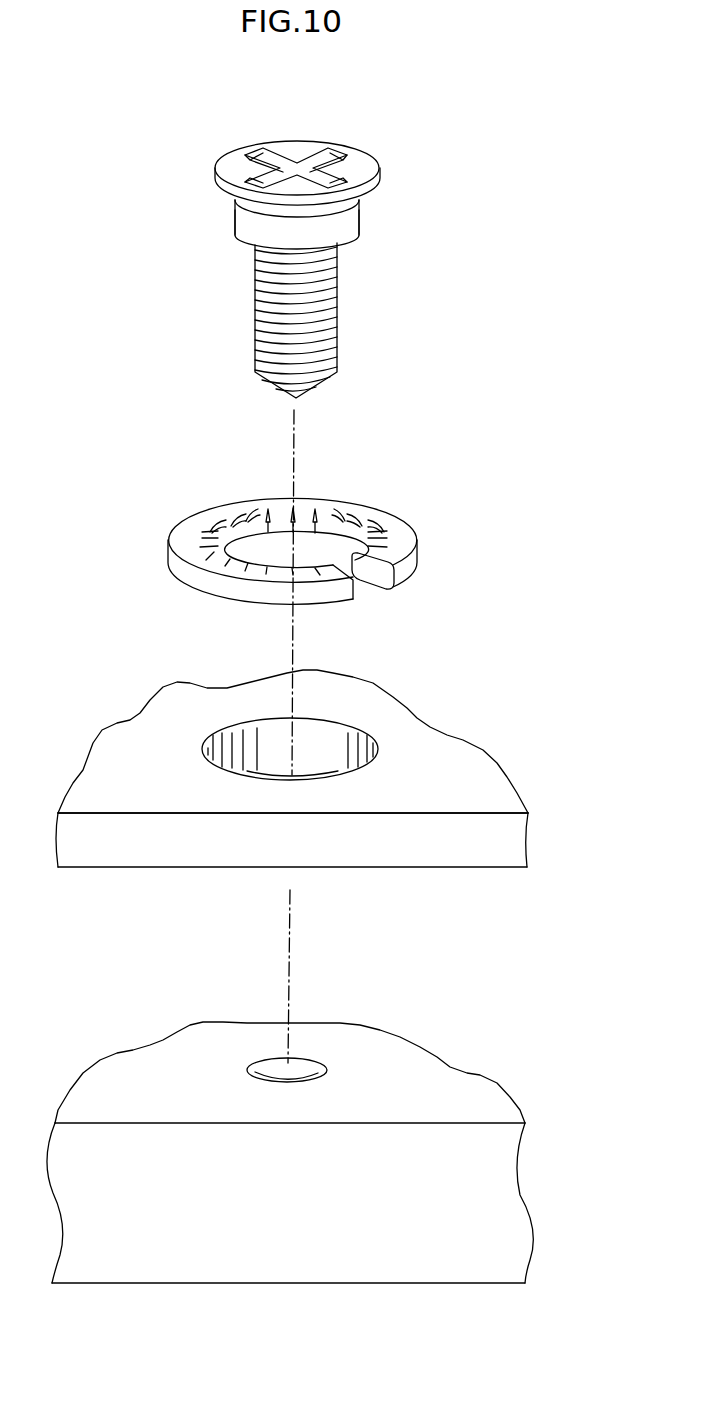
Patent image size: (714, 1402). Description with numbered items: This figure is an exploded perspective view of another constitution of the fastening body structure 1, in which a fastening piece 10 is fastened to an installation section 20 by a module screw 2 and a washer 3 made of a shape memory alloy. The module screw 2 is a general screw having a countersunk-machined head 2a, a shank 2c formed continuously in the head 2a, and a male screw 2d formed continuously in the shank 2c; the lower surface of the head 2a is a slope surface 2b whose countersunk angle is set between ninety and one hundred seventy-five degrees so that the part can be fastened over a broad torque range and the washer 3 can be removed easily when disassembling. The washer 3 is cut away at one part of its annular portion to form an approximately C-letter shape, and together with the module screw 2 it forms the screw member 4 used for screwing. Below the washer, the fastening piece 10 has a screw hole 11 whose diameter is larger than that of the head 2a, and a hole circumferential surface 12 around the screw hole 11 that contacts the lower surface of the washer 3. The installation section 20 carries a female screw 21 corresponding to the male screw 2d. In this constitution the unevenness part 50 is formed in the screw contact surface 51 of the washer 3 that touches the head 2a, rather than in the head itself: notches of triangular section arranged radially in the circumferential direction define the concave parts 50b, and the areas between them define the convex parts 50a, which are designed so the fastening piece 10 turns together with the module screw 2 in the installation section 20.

The fastening body structure 1 is at (499, 447).
The module screw 2 is at (206, 285).
The head 2a is at (357, 167).
The slope surface 2b is at (337, 218).
The shank 2c is at (322, 233).
The male screw 2d is at (320, 310).
The washer 3 is at (175, 492).
The screw member 4 is at (103, 320).
The fastening piece 10 is at (473, 790).
The screw hole 11 is at (329, 745).
The hole circumferential surface 12 is at (392, 747).
The installation section 20 is at (432, 1093).
The female screw 21 is at (305, 1075).
The unevenness part 50 is at (349, 489).
The convex part 50a is at (317, 510).
The concave part 50b is at (258, 517).
The screw contact surface 51 is at (363, 520).